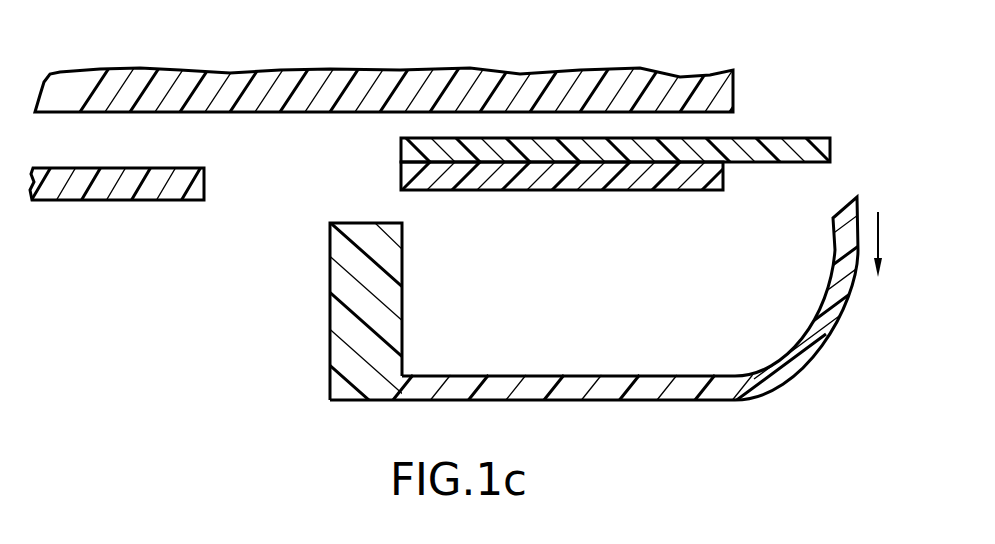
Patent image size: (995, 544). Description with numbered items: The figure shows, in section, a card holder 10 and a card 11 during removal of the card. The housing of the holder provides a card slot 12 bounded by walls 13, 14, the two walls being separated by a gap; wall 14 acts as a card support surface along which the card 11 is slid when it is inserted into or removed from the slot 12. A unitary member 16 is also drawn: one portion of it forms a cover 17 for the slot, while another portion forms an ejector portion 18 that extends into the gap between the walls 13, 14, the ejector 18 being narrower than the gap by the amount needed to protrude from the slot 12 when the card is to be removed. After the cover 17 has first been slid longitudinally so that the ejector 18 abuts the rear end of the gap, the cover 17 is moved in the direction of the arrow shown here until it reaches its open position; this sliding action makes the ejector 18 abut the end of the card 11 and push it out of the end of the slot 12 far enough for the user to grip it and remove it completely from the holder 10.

The card holder 10 is at (858, 160).
The card 11 is at (757, 163).
The card slot 12 is at (789, 92).
The wall 13 is at (104, 201).
The wall 14 is at (572, 191).
The unitary member 16 is at (605, 332).
The cover 17 is at (832, 323).
The ejector portion 18 is at (398, 301).